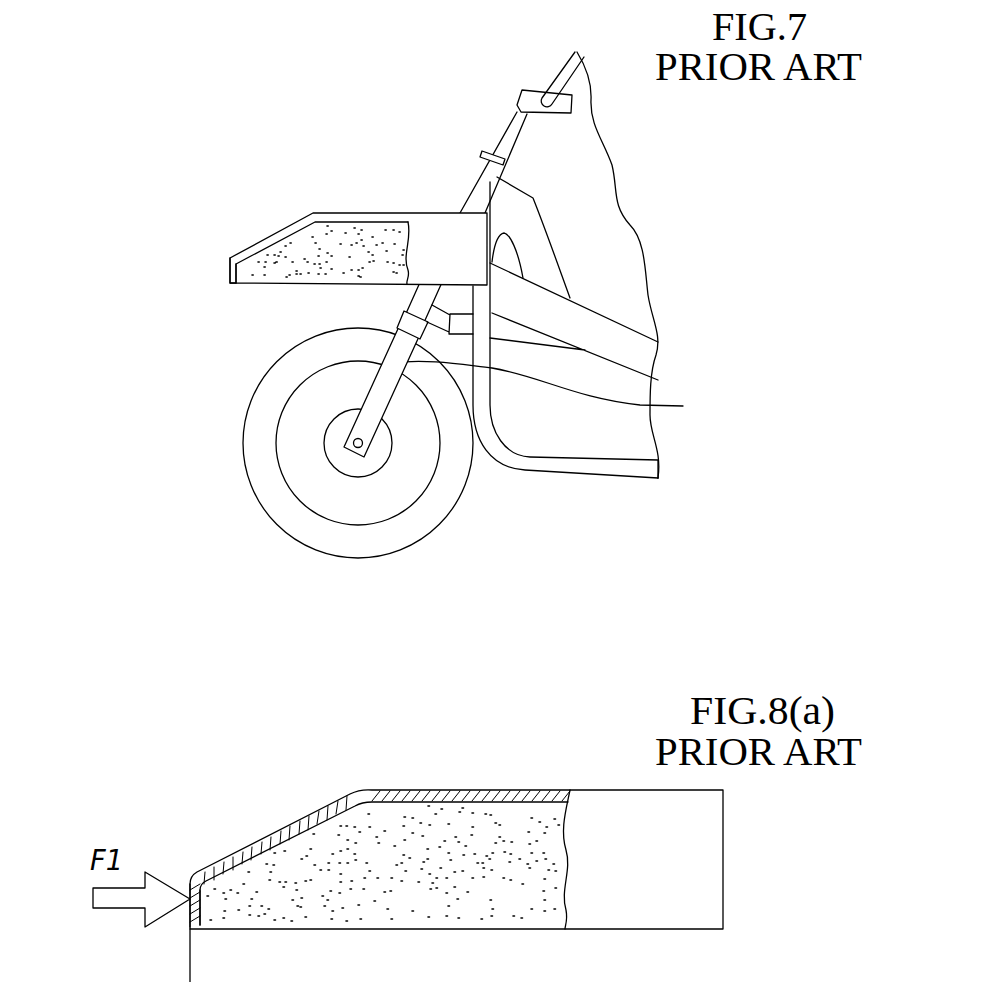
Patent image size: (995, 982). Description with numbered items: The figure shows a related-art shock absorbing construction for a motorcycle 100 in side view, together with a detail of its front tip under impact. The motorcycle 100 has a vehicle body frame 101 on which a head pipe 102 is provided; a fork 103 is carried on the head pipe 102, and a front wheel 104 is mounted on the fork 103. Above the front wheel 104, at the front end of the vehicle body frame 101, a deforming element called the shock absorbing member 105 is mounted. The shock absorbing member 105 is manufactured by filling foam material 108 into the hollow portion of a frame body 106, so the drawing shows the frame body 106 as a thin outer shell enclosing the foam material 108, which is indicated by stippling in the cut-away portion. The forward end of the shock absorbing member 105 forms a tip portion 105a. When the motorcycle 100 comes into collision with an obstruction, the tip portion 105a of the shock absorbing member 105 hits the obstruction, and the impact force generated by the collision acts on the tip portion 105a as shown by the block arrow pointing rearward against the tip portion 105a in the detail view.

In FIG. 7, the motorcycle 100 is at (358, 122).
In FIG. 7, the vehicle body frame 101 is at (543, 291).
In FIG. 7, the head pipe 102 is at (497, 171).
In FIG. 7, the fork 103 is at (563, 394).
In FIG. 7, the front wheel 104 is at (458, 498).
In FIG. 7, the shock absorbing member 105 is at (346, 205).
The shock absorbing member 105 is at (527, 780).
In FIG. 7, the tip portion 105a is at (228, 272).
The tip portion 105a is at (190, 883).
In FIG. 7, the frame body 106 is at (280, 230).
The frame body 106 is at (422, 790).
In FIG. 7, the foam material 108 is at (387, 233).
The foam material 108 is at (350, 827).